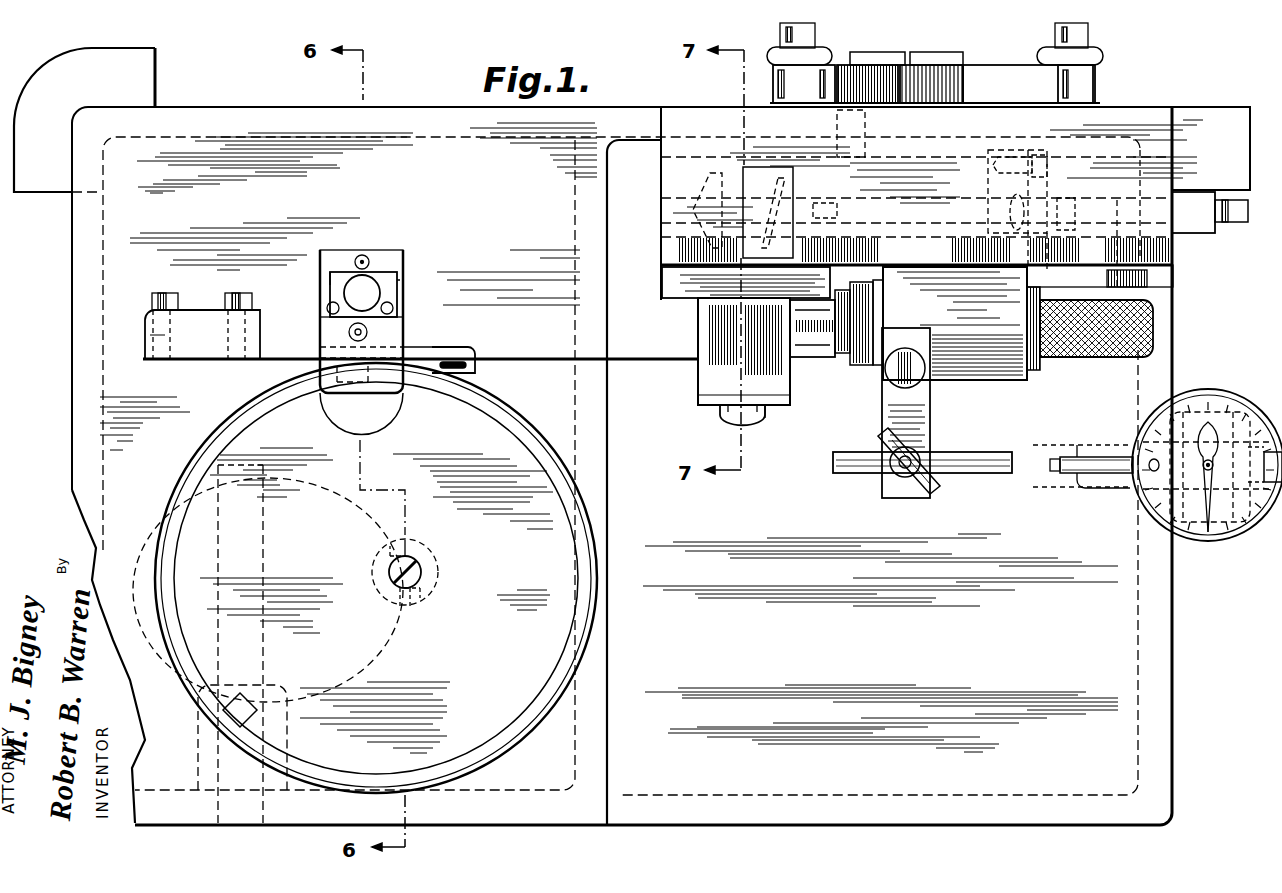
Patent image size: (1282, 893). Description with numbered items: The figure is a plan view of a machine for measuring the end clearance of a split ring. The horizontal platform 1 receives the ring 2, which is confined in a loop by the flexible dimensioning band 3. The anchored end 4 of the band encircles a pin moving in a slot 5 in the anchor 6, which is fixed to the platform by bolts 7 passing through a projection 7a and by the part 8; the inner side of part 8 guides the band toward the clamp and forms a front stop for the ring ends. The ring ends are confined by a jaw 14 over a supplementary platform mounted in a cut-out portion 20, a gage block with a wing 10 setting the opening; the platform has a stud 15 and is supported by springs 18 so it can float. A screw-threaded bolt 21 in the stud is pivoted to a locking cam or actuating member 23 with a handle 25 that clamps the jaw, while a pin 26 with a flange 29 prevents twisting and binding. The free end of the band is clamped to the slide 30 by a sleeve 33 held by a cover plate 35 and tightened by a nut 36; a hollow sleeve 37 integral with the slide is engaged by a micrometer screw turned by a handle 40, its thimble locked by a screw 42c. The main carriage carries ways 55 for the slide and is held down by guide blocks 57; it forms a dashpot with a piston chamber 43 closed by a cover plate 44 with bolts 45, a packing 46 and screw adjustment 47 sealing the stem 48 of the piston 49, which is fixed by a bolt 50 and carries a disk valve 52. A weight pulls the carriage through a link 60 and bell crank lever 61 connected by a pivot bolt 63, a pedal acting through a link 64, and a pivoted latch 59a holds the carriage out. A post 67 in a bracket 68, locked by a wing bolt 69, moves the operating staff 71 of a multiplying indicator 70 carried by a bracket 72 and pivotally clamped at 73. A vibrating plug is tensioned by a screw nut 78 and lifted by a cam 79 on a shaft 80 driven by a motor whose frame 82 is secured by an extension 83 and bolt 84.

The horizontal platform 1 is at (432, 135).
The ring 2 is at (505, 432).
The flexible dimensioning band 3 is at (548, 440).
The anchored end of the band 4 is at (455, 362).
The slot 5 is at (465, 362).
The anchor 6 is at (410, 352).
The bolts 7 is at (232, 300).
The projection 7a is at (190, 330).
The part 8 is at (258, 356).
The wing of gage block 10 is at (355, 262).
The jaw 14 is at (385, 258).
The stud 15 is at (440, 575).
The springs 18 is at (387, 302).
The cut-out portion 20 is at (385, 435).
The screw-threaded bolt 21 is at (398, 292).
The locking cam or actuating member 23 is at (332, 275).
The handle 25 is at (345, 293).
The pin 26 is at (345, 338).
The flange 29 is at (335, 315).
The slide or clamp 30 is at (698, 372).
The sleeve 33 is at (765, 412).
The cover plate 35 is at (706, 402).
The nut 36 is at (730, 418).
The screw threaded member or hollow sleeve 37 is at (820, 358).
The handle 40 is at (1108, 355).
The screw 42c is at (893, 380).
The hollow cylinder or piston chamber 43 is at (715, 178).
The cover plate 44 is at (1048, 186).
The bolts 45 is at (1010, 157).
The packing 46 is at (1010, 210).
The screw adjustment 47 is at (1076, 212).
The stem 48 is at (1185, 228).
The piston 49 is at (840, 233).
The bolt 50 is at (1232, 225).
The flap or disk valve 52 is at (768, 193).
The ways 55 is at (684, 300).
The guide blocks 57 is at (678, 244).
The pivoted latch 59a is at (1085, 268).
The link 60 is at (1100, 58).
The bell crank lever 61 is at (990, 75).
The pivot bolt 63 is at (838, 128).
The link 64 is at (810, 58).
The post 67 is at (975, 455).
The bracket 68 is at (925, 412).
The wing bolt 69 is at (900, 492).
The multiplying indicator 70 is at (1207, 542).
The operating staff 71 is at (1082, 458).
The bracket 72 is at (1122, 485).
The pivotal clamp 73 is at (1252, 450).
The screw nut 78 is at (400, 560).
The lifting cam 79 is at (420, 552).
The carrying shaft 80 is at (412, 590).
The motor frame 82 is at (318, 658).
The extension 83 is at (247, 742).
The bolt 84 is at (232, 698).